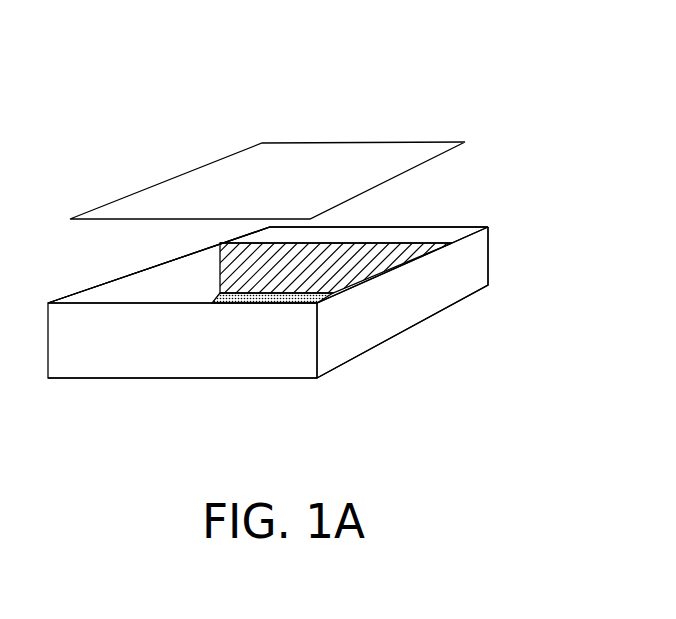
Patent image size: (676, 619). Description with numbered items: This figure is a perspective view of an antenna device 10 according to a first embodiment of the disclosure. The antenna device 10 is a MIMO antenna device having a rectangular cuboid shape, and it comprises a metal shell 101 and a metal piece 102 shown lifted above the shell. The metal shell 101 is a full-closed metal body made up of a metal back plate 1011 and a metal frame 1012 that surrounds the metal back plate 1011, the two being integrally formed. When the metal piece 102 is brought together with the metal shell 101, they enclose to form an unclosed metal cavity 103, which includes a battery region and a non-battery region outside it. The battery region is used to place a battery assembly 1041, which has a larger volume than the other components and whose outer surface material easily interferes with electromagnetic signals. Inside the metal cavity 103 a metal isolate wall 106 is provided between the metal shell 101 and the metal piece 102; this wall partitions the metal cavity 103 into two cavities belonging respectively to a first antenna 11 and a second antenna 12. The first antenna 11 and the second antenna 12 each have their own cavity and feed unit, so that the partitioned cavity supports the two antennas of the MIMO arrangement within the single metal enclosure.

The antenna device 10 is at (147, 41).
The metal piece 102 is at (368, 143).
The metal shell 101 is at (420, 390).
The second antenna 12 is at (397, 235).
The first antenna 11 is at (163, 274).
The metal back plate 1011 is at (285, 378).
The metal frame 1012 is at (370, 322).
The metal cavity 103 is at (205, 257).
The metal isolate wall 106 is at (413, 243).
The battery assembly 1041 is at (333, 291).